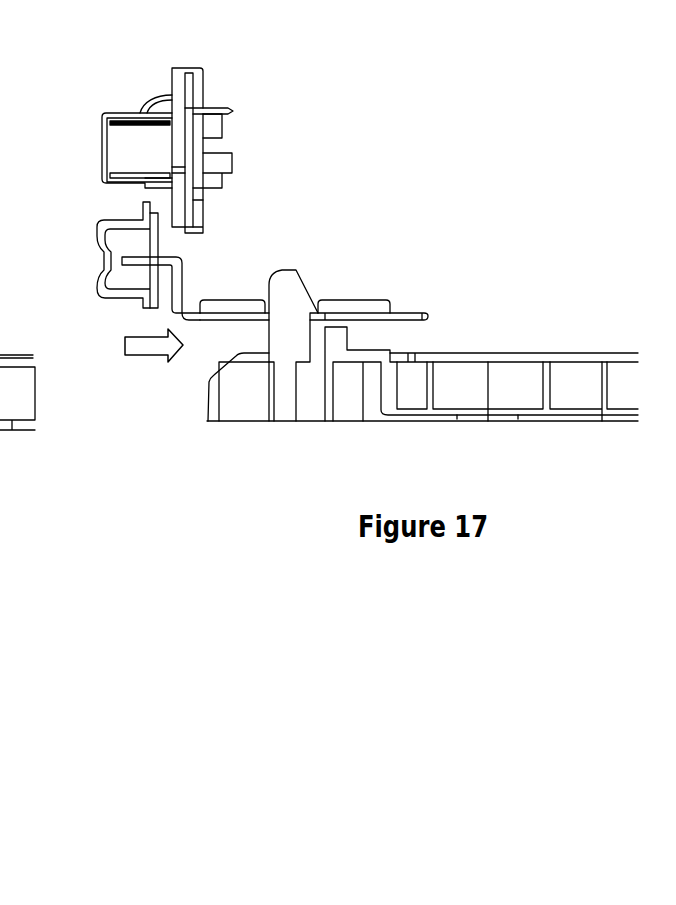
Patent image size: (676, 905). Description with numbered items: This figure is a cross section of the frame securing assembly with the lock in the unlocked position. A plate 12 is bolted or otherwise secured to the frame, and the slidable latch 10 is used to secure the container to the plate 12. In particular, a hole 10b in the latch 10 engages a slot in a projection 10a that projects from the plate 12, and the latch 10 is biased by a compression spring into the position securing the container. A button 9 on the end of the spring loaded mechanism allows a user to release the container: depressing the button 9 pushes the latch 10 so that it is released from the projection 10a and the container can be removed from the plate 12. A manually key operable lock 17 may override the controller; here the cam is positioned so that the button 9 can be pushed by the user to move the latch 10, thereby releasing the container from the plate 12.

The key operable lock 17 is at (107, 155).
The button 9 is at (107, 280).
The latch 10 is at (429, 310).
The projection 10a is at (303, 293).
The hole 10b is at (322, 327).
The plate 12 is at (463, 373).